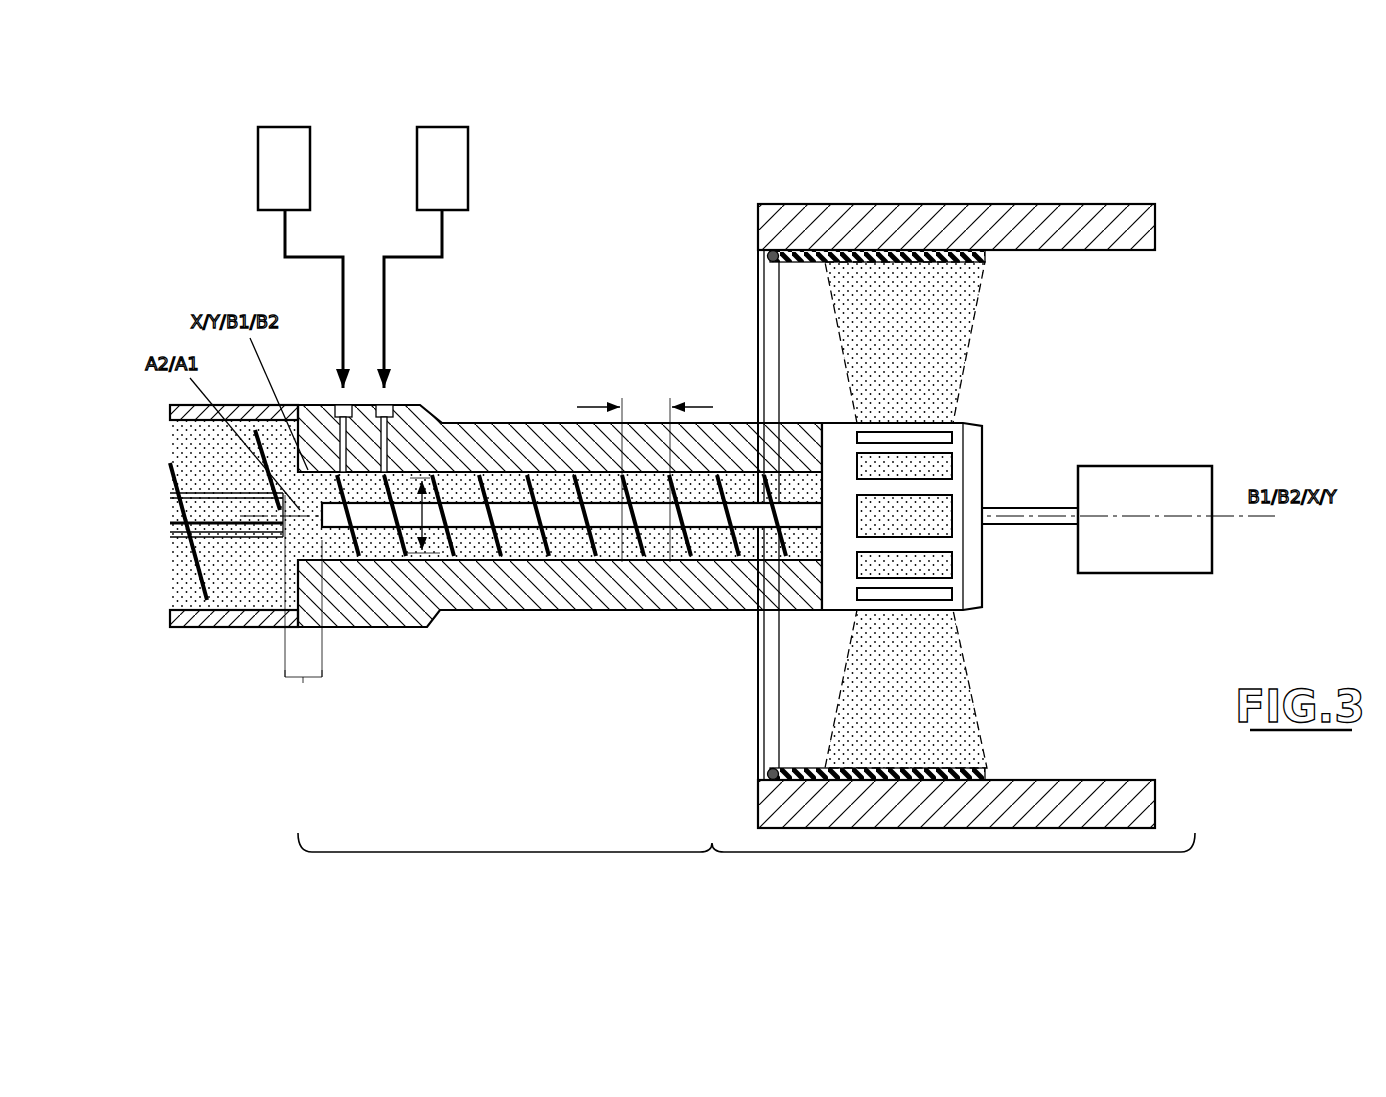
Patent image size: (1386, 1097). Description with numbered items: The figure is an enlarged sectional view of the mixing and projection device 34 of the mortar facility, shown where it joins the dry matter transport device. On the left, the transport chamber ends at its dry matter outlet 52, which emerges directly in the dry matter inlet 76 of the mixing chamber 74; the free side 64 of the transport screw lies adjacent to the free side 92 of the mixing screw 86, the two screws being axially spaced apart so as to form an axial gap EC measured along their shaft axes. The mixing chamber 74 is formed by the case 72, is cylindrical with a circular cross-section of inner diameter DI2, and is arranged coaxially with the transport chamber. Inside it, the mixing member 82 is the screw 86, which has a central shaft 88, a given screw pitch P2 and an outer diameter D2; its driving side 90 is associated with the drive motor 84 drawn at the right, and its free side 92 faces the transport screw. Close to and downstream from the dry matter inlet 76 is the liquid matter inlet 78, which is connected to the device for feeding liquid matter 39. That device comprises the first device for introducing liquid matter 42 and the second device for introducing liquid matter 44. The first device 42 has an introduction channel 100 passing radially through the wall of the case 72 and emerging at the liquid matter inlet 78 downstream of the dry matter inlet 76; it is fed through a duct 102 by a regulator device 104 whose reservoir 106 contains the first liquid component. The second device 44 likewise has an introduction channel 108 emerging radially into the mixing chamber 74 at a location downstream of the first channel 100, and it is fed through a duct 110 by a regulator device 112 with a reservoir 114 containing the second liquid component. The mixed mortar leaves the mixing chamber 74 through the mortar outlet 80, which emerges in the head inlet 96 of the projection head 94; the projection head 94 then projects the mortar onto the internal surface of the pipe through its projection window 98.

The mixing and projection device 34 is at (746, 860).
The device for feeding liquid matter 39 is at (370, 112).
The first device for introducing liquid matter 42 is at (291, 98).
The second device for introducing liquid matter 44 is at (520, 100).
The dry matter outlet 52 is at (266, 574).
The free side 64 is at (283, 562).
The case 72 is at (517, 440).
The mixing chamber 74 is at (558, 490).
The dry matter inlet 76 is at (312, 545).
The liquid matter inlet 78 is at (425, 344).
The mortar outlet 80 is at (815, 556).
The mixing member 82 is at (610, 535).
The drive motor 84 is at (1142, 560).
The screw 86 is at (572, 537).
The central shaft 88 is at (458, 512).
The driving side 90 is at (992, 496).
The free side 92 is at (322, 420).
The projection head 94 is at (946, 487).
The head inlet 96 is at (816, 459).
The projection window 98 is at (933, 563).
The introduction channel 100 is at (401, 396).
The duct 102 is at (285, 245).
The regulator device 104 is at (224, 130).
The reservoir 106 is at (268, 160).
The introduction channel 108 is at (390, 437).
The duct 110 is at (442, 245).
The regulator device 112 is at (490, 191).
The reservoir 114 is at (458, 143).
The screw pitch P2 is at (645, 467).
The outer diameter D2 is at (437, 553).
The inner diameter DI2 is at (723, 532).
The axial gap EC is at (303, 691).